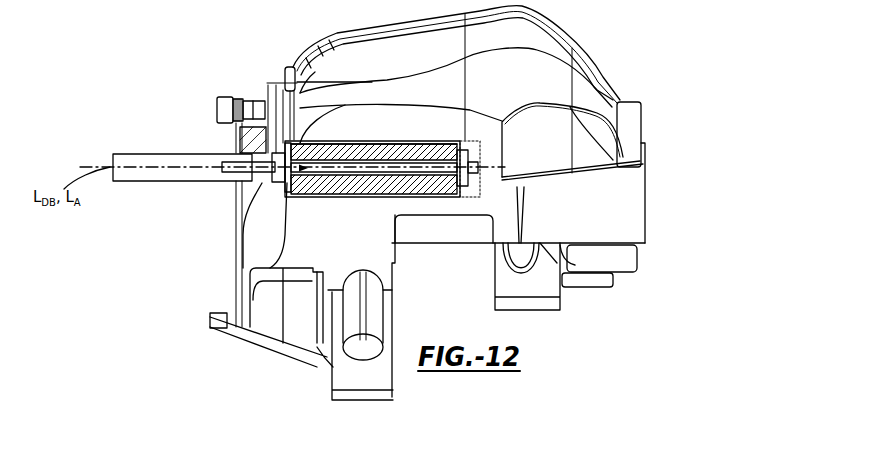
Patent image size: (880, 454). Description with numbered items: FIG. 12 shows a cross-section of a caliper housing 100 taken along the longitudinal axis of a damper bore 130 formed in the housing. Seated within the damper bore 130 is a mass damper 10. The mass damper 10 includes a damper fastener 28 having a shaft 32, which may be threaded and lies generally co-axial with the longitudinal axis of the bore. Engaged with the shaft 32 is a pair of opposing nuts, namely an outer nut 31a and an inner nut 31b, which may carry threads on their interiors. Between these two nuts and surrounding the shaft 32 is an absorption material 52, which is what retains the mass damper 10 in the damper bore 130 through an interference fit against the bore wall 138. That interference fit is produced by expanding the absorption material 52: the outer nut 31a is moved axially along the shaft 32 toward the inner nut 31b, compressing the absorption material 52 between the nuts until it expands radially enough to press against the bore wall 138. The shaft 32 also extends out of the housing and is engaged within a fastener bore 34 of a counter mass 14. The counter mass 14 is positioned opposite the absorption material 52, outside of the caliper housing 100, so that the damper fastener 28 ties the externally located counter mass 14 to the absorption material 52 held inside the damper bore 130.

The caliper housing 100 is at (676, 173).
The mass damper 10 is at (298, 147).
The counter mass 14 is at (142, 173).
The damper fastener 28 is at (279, 183).
The outer nut 31a is at (266, 156).
The inner nut 31b is at (466, 156).
The shaft 32 is at (307, 171).
The fastener bore 34 is at (233, 171).
The absorption material 52 is at (409, 158).
The damper bore 130 is at (342, 145).
The bore wall 138 is at (378, 145).